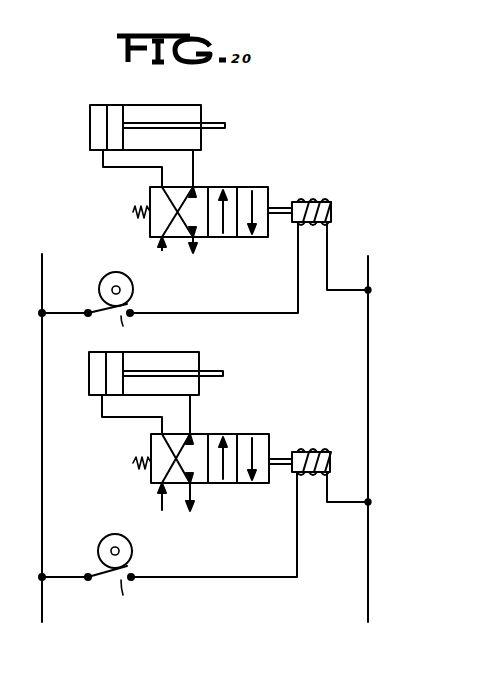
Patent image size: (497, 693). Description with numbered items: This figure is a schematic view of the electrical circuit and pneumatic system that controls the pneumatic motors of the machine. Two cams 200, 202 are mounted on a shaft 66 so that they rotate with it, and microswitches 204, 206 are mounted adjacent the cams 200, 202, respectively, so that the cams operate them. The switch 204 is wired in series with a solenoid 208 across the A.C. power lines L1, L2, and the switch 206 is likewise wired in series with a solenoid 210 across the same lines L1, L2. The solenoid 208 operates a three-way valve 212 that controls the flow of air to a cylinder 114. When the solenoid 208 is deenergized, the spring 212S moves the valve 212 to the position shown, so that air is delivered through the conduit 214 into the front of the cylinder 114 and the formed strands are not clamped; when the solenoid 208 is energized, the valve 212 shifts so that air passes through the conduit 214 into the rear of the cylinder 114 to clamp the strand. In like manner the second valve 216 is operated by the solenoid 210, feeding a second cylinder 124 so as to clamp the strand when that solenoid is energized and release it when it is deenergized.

The cylinder 114 is at (92, 120).
The cylinder 124 is at (203, 355).
The 3-way valve 212 is at (239, 186).
The spring 212S is at (139, 207).
The conduit 214 is at (160, 249).
The valve 216 is at (236, 432).
The solenoid 208 is at (334, 213).
The solenoid 210 is at (322, 453).
The cam 200 is at (107, 280).
The cam 202 is at (114, 532).
The microswitch 204 is at (131, 331).
The microswitch 206 is at (130, 599).
The shaft 66 is at (112, 292).
The A.C. power line L1 is at (41, 271).
The A.C. power line L2 is at (370, 262).